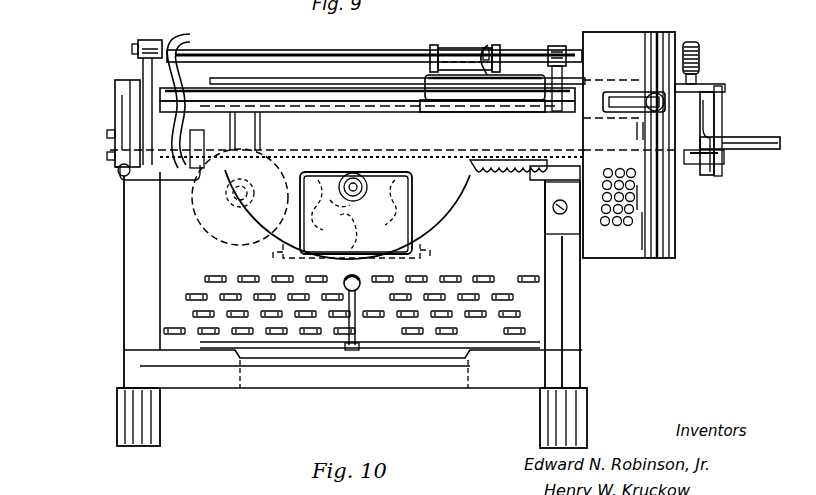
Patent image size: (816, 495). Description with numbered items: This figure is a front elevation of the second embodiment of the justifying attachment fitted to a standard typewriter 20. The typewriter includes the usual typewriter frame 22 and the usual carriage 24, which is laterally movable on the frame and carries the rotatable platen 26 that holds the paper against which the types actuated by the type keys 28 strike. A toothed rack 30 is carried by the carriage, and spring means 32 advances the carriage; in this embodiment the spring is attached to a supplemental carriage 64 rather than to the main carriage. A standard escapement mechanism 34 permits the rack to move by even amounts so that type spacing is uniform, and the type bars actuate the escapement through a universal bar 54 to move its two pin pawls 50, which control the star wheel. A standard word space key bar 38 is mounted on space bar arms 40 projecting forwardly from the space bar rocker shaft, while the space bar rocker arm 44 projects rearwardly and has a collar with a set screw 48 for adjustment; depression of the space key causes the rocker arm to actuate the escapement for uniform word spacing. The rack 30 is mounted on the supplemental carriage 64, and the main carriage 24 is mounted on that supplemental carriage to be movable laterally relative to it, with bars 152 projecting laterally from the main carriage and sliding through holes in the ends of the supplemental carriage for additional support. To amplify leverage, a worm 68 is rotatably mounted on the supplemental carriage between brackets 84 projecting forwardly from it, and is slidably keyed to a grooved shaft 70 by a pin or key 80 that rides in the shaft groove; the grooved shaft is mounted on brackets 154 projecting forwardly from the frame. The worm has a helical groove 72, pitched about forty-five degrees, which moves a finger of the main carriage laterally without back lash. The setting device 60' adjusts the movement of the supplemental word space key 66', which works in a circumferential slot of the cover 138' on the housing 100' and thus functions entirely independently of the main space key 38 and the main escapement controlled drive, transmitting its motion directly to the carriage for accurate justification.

The typewriter 20 is at (124, 249).
The typewriter frame 22 is at (124, 205).
The carriage 24 is at (700, 68).
The platen 26 is at (367, 113).
The type keys 28 is at (450, 278).
The toothed rack 30 is at (486, 162).
The spring means 32 is at (240, 197).
The escapement mechanism 34 is at (412, 202).
The word space key bar 38 is at (345, 352).
The space bar arms 40 is at (243, 392).
The space bar rocker arm 44 is at (358, 334).
The set screw 48 is at (360, 283).
The pin pawls 50 is at (345, 240).
The universal bar 54 is at (440, 225).
The setting device 60' is at (626, 131).
The supplemental carriage 64 is at (722, 118).
The supplemental word space key 66' is at (633, 79).
The worm 68 is at (452, 47).
The grooved shaft 70 is at (382, 42).
The helical groove 72 is at (486, 62).
The pin or key 80 is at (492, 50).
The brackets 84 is at (436, 45).
The housing 100' is at (639, 133).
The cover 138' is at (625, 232).
The bars 152 is at (734, 150).
The brackets 154 is at (148, 40).